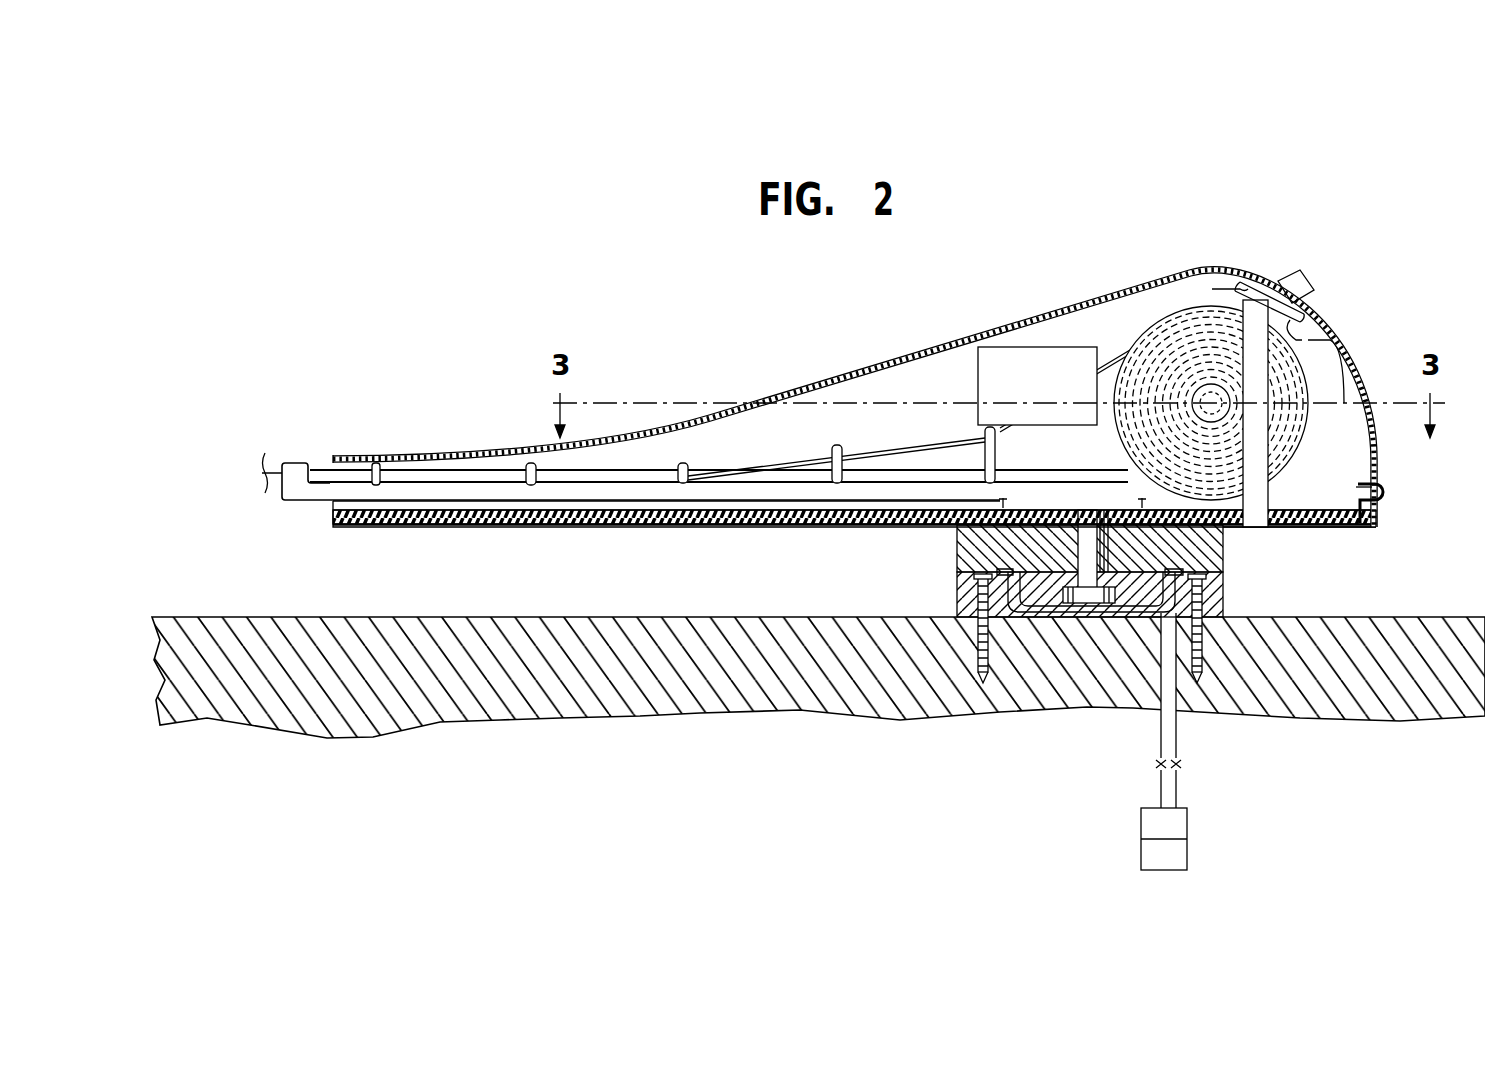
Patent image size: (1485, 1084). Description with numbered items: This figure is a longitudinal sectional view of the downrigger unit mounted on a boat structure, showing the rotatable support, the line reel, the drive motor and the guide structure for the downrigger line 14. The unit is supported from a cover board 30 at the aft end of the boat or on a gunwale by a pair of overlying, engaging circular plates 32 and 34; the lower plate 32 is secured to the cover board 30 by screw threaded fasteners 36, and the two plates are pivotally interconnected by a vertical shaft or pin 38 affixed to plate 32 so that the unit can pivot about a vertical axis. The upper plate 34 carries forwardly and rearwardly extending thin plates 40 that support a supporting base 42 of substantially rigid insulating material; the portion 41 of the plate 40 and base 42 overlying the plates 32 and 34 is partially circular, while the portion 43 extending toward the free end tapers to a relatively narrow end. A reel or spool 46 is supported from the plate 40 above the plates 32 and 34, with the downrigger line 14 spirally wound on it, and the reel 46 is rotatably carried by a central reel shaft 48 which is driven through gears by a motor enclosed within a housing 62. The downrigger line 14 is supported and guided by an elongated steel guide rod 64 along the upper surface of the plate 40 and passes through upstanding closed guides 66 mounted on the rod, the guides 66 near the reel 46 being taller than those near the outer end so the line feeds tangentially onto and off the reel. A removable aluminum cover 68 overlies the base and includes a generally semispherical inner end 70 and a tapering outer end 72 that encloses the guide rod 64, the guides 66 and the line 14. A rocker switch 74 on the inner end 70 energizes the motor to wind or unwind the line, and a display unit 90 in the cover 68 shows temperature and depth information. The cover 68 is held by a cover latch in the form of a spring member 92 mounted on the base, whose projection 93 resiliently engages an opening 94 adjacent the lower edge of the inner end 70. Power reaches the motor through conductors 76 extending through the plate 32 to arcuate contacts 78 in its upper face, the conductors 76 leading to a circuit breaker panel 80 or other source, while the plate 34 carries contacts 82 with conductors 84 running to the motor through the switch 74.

The downrigger line 14 is at (274, 470).
The cover board 30 is at (1438, 634).
The circular plate 32 is at (957, 596).
The circular plate 34 is at (957, 552).
The screw threaded fasteners 36 is at (983, 683).
The vertical shaft or pin 38 is at (1090, 603).
The thin plates 40 is at (593, 530).
The portion 41 is at (1348, 530).
The supporting base 42 is at (533, 524).
The portion 43 is at (385, 528).
The reel or spool 46 is at (1180, 345).
The central reel shaft 48 is at (1211, 402).
The housing 62 is at (996, 362).
The guide rod 64 is at (498, 496).
The closed guides 66 is at (683, 462).
The cover 68 is at (887, 365).
The inner end 70 is at (1342, 320).
The tapering outer end 72 is at (368, 455).
The rocker switch 74 is at (1298, 278).
The conductors 76 is at (1162, 730).
The arcuate contacts 78 is at (1223, 597).
The contacts 82 is at (1176, 572).
The conductors 84 is at (1142, 502).
The circuit breaker panel 80 is at (1172, 854).
The display unit 90 is at (1338, 362).
The spring member 92 is at (1380, 518).
The projection 93 is at (1390, 492).
The opening 94 is at (1356, 492).